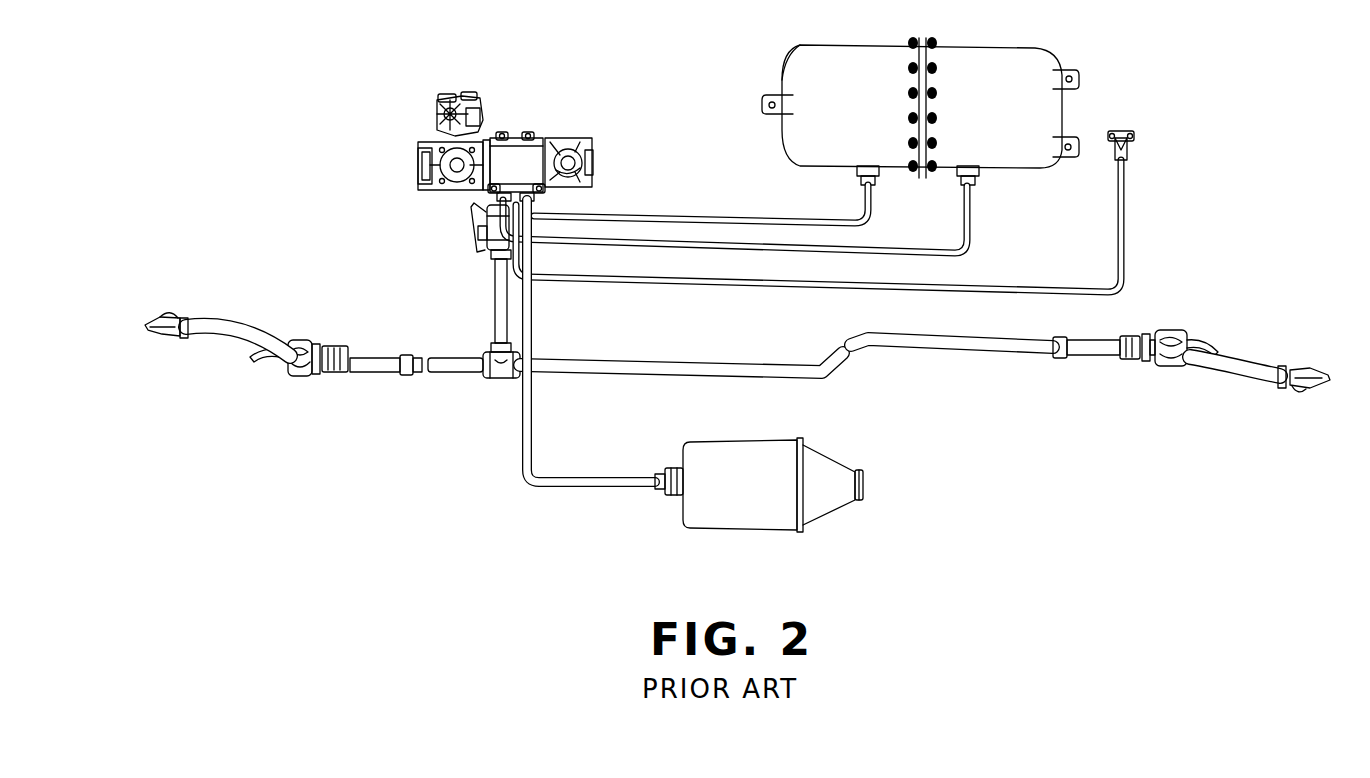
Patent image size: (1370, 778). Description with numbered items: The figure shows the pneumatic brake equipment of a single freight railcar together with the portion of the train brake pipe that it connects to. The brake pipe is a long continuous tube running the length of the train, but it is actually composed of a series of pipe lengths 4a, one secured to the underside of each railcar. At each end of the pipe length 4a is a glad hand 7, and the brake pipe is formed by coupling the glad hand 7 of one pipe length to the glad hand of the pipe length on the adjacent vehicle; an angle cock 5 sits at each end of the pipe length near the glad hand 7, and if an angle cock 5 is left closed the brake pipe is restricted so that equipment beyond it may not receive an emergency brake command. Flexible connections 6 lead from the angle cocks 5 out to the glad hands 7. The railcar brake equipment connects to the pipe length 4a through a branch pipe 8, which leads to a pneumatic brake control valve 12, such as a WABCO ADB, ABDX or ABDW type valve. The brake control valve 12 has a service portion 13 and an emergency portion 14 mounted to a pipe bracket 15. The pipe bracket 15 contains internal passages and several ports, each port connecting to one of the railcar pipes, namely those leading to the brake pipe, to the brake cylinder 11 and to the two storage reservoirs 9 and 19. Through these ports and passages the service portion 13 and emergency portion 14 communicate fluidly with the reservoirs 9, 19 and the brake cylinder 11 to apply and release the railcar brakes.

The pneumatic brake control valve 12 is at (504, 100).
The service portion 13 is at (432, 142).
The emergency portion 14 is at (588, 148).
The pipe bracket 15 is at (516, 132).
The storage reservoir 19 is at (792, 75).
The storage reservoir 9 is at (893, 130).
The branch pipe 8 is at (494, 300).
The brake cylinder 11 is at (830, 500).
The pipe length 4a is at (700, 355).
The angle cock 5 is at (302, 342).
The hose 6 is at (243, 340).
The glad hand 7 is at (165, 340).